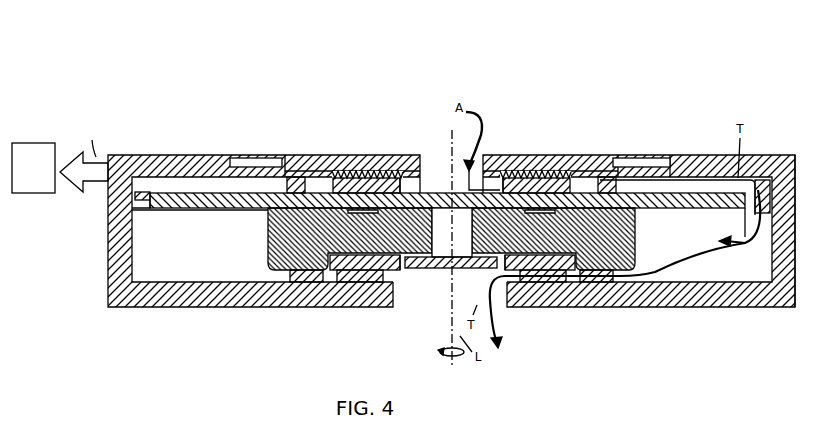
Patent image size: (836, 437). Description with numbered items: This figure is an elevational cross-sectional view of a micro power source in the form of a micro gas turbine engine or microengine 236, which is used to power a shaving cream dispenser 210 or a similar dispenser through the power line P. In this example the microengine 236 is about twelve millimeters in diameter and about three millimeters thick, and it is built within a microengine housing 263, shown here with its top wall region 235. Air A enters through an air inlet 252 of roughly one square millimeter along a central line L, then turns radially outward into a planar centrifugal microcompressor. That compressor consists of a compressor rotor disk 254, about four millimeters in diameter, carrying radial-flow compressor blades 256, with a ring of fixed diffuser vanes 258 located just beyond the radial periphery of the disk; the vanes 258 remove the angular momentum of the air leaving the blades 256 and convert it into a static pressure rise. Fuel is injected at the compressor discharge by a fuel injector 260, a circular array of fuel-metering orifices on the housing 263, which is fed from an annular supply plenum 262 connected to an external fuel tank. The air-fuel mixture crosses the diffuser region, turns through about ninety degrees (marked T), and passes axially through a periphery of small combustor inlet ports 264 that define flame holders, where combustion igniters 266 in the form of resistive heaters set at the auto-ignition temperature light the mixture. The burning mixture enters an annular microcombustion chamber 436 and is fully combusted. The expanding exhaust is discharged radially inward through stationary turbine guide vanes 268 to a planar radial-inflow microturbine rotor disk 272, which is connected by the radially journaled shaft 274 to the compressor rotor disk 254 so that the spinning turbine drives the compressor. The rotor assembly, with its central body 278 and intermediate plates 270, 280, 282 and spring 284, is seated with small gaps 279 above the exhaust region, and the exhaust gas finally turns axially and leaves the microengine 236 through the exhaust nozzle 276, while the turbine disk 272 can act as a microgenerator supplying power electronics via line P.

The shaving cream dispenser 210 is at (60, 158).
The housing top wall 235 is at (698, 162).
The micro gas turbine engine 236 is at (651, 69).
The air inlet 252 is at (451, 177).
The compressor rotor disk 254 is at (423, 193).
The compressor blades 256 is at (336, 188).
The diffuser vanes 258 is at (297, 177).
The fuel injector 260 is at (279, 163).
The annular supply plenum 262 is at (235, 163).
The microengine housing 263 is at (792, 172).
The combustor inlet ports 264 is at (148, 212).
The combustion igniters 266 is at (142, 194).
The turbine guide vanes 268 is at (300, 282).
The center plate 270 is at (428, 269).
The microturbine rotor disk 272 is at (350, 282).
The shaft 274 is at (463, 248).
The exhaust nozzle 276 is at (434, 249).
The piston body 278 is at (268, 223).
The gap 279 is at (403, 270).
The piston slot 280 is at (268, 241).
The seal 282 is at (373, 160).
The spring 284 is at (362, 172).
The microcombustion chamber 436 is at (200, 242).